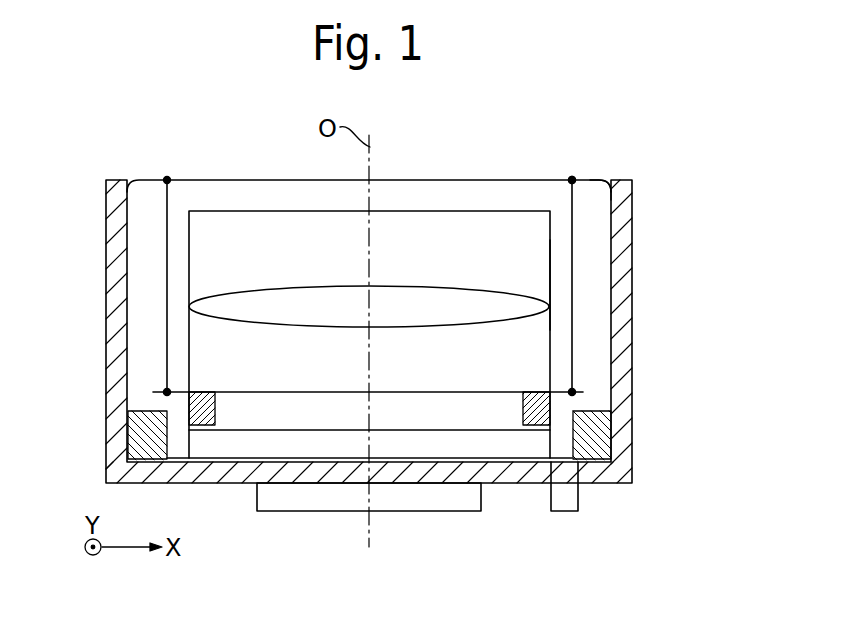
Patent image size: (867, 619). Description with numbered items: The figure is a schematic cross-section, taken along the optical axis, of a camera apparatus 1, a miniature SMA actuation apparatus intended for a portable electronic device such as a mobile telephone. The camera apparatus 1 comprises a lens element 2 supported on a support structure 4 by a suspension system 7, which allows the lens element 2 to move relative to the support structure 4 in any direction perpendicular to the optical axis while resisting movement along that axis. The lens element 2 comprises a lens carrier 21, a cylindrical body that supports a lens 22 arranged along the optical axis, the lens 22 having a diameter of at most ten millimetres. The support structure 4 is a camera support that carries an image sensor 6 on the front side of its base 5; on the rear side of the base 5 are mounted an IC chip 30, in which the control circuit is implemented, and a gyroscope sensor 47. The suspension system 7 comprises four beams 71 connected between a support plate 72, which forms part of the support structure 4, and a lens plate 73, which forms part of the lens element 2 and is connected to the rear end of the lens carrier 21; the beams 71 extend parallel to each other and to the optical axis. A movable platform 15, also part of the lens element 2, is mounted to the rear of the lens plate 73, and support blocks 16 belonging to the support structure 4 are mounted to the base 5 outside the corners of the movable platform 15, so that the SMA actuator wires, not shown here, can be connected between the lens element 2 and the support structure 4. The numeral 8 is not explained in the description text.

The camera apparatus 1 is at (243, 152).
The lens element 2 is at (497, 233).
The lens carrier 21 is at (551, 277).
The lens 22 is at (430, 300).
The support structure 4 is at (618, 260).
The base 5 is at (594, 472).
The image sensor 6 is at (512, 452).
The suspension system 7 is at (550, 342).
The beams 71 is at (573, 197).
The support plate 72 is at (580, 178).
The lens plate 73 is at (575, 391).
The adhesive 8 is at (164, 392).
The movable platform 15 is at (553, 397).
The support blocks 16 is at (597, 455).
The IC chip 30 is at (433, 505).
The gyroscope sensor 47 is at (563, 505).